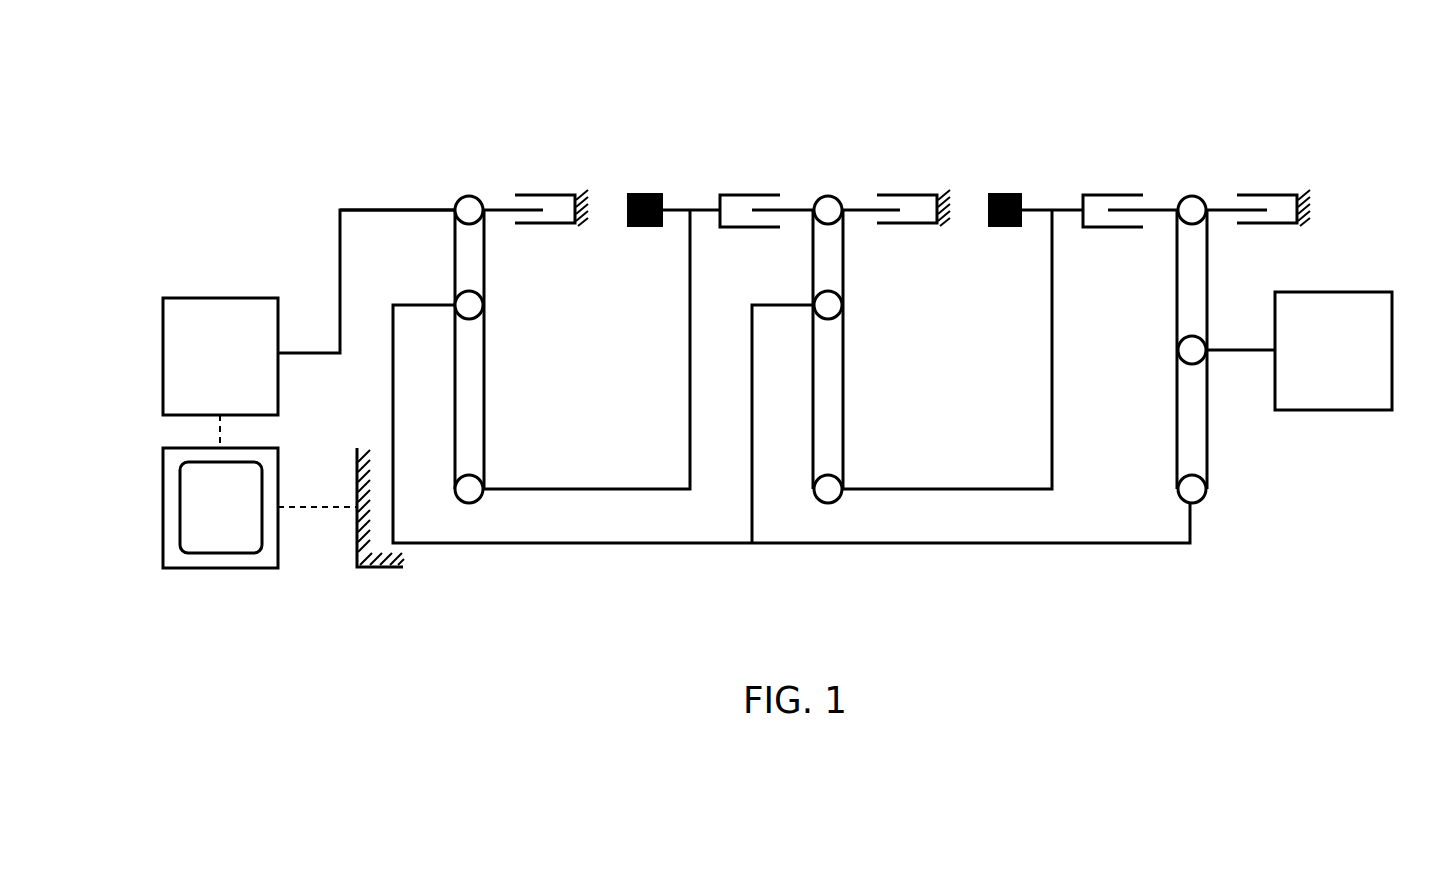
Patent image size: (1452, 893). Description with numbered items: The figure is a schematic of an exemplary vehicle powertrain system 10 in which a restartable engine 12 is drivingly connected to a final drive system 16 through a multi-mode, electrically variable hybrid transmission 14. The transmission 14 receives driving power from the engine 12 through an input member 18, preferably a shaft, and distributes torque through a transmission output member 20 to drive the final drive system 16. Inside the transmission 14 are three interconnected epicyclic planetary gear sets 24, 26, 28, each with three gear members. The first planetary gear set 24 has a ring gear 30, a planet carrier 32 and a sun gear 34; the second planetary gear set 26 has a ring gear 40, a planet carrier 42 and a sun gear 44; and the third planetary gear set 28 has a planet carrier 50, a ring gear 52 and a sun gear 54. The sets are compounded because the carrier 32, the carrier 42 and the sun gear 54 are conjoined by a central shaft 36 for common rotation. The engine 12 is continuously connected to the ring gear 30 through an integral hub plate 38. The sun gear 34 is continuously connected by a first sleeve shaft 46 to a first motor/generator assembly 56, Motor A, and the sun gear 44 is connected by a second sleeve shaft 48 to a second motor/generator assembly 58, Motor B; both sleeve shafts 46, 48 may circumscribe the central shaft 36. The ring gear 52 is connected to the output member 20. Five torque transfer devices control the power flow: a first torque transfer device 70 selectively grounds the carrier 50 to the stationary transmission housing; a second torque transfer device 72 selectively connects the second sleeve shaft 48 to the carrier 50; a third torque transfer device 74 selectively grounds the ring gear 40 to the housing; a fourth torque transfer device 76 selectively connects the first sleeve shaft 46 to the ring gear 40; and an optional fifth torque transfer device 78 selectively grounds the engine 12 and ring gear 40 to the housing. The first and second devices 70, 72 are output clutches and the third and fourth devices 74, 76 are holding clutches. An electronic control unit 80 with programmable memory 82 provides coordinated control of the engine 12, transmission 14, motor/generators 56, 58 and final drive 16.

The vehicle powertrain system 10 is at (220, 165).
The engine 12 is at (163, 352).
The hybrid transmission 14 is at (697, 140).
The final drive system 16 is at (1392, 348).
The input member 18 is at (318, 352).
The transmission output member 20 is at (1232, 352).
The first planetary gear set 24 is at (532, 332).
The second planetary gear set 26 is at (889, 335).
The third planetary gear set 28 is at (1174, 335).
The first member of first planetary gear set 30 is at (470, 195).
The second member of first planetary gear set 32 is at (484, 305).
The third member of first planetary gear set 34 is at (478, 500).
The central shaft 36 is at (612, 543).
The integral hub plate 38 is at (388, 209).
The first member of second planetary gear set 40 is at (828, 195).
The second member of second planetary gear set 42 is at (843, 305).
The third member of second planetary gear set 44 is at (838, 502).
The first sleeve shaft 46 is at (650, 489).
The second sleeve shaft 48 is at (1013, 489).
The first member of third planetary gear set 50 is at (1192, 195).
The second member of third planetary gear set 52 is at (1177, 350).
The third member of third planetary gear set 54 is at (1180, 490).
The first motor/generator assembly 56 is at (645, 228).
The second motor/generator assembly 58 is at (1000, 228).
The first torque transfer device 70 is at (1301, 202).
The second torque transfer device 72 is at (1135, 178).
The third torque transfer device 74 is at (932, 215).
The fourth torque transfer device 76 is at (737, 172).
The fifth torque transfer device 78 is at (570, 215).
The electronic control unit 80 is at (163, 470).
The programmable memory 82 is at (180, 535).